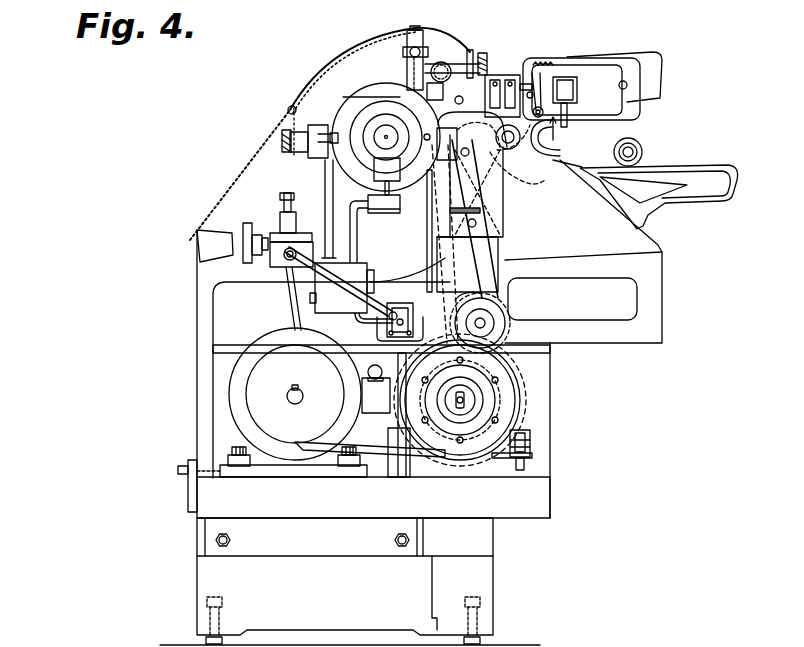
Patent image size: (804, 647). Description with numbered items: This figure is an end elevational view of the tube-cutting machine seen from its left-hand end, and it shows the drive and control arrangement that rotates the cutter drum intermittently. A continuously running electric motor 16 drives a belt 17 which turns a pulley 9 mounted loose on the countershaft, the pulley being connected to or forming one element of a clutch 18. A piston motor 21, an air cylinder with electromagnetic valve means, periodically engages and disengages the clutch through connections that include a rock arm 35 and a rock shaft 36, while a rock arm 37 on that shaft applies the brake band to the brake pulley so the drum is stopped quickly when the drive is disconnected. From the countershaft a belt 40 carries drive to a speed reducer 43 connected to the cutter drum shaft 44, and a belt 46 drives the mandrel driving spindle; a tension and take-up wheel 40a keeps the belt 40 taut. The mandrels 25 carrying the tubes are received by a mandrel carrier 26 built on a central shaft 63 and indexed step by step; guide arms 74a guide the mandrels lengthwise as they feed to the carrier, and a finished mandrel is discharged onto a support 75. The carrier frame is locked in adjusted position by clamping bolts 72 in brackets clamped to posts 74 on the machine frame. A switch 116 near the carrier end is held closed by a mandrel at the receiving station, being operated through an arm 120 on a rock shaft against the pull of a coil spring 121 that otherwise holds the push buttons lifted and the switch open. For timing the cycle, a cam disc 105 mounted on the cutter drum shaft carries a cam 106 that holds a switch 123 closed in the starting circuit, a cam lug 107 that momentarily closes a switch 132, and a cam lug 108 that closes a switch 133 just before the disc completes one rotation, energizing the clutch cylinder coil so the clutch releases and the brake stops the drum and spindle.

The pulley 9 is at (472, 447).
The electric motor 16 is at (251, 362).
The belt 17 is at (384, 451).
The clutch 18 is at (520, 404).
The piston motor 21 is at (428, 319).
The mandrel 25 is at (641, 149).
The mandrel carrier 26 is at (567, 149).
The rock arm 35 is at (390, 416).
The rock shaft 36 is at (531, 444).
The rock arm 37 is at (528, 437).
The belt 40 is at (490, 227).
The tension and take-up wheel 40a is at (494, 317).
The speed reducer 43 is at (488, 198).
The cutter drum shaft 44 is at (388, 135).
The belt 46 is at (490, 214).
The central shaft 63 is at (514, 150).
The clamping bolt 72 is at (457, 98).
The post 74 is at (407, 63).
The guide arm 74a is at (652, 73).
The support 75 is at (705, 163).
The cam disc 105 is at (366, 112).
The cam 106 is at (387, 176).
The cam lug 107 is at (400, 80).
The cam lug 108 is at (352, 133).
The switch 116 is at (567, 92).
The arm 120 is at (528, 78).
The coil spring 121 is at (553, 52).
The switch 123 is at (384, 204).
The switch 132 is at (446, 144).
The switch 133 is at (318, 143).